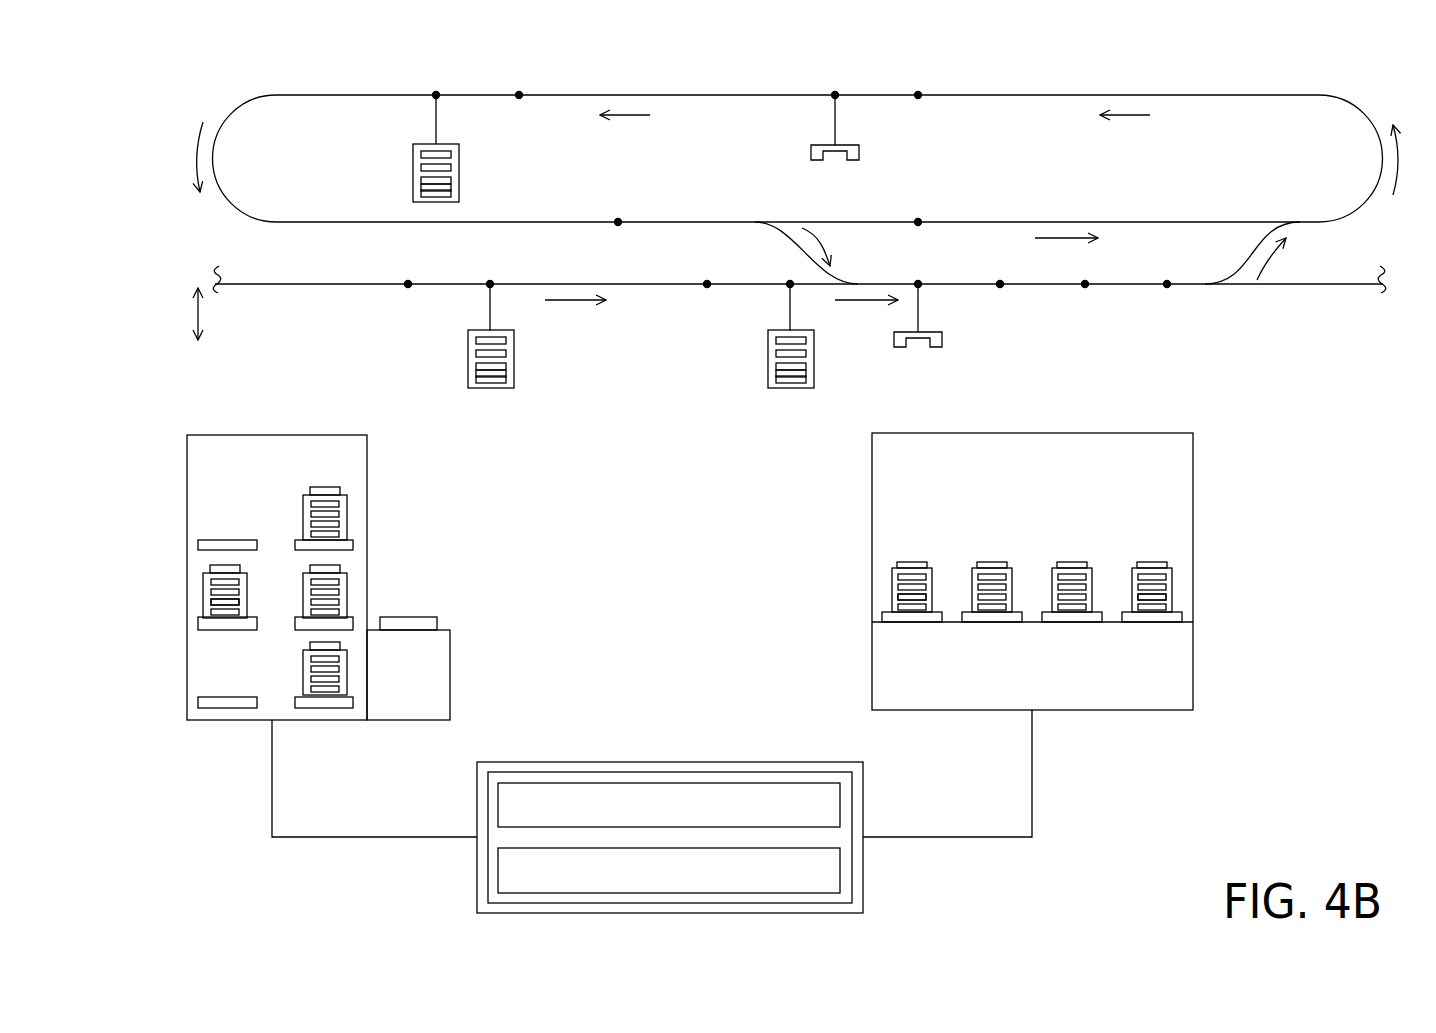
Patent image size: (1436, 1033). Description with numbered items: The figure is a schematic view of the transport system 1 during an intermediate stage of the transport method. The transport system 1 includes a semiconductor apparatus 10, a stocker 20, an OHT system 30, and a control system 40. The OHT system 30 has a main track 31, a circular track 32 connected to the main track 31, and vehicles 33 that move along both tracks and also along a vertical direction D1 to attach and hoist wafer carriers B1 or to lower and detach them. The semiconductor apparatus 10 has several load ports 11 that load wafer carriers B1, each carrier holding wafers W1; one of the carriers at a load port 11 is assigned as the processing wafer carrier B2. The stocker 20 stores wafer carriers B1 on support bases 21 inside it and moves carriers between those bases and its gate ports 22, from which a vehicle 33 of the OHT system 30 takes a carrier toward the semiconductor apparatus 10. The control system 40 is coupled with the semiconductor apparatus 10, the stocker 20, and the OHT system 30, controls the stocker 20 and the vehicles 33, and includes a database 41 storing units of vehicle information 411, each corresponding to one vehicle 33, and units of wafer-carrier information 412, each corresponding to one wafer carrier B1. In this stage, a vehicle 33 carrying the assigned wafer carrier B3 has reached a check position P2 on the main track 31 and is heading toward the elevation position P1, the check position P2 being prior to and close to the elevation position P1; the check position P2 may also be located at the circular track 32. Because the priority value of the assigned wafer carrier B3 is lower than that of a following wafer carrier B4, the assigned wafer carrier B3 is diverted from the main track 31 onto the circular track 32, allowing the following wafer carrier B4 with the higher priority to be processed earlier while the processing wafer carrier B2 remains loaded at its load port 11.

The transport system 1 is at (1380, 104).
The OHT (Over Hoist Transport) system 30 is at (228, 110).
The circular track 32 is at (236, 214).
The main track 31 is at (247, 283).
The vehicle 33 is at (463, 145).
The vertical direction D1 is at (196, 316).
The elevation position P1 is at (921, 276).
The check position P2 is at (622, 214).
The wafer carrier B1 is at (410, 160).
The processing wafer carrier B2 is at (890, 575).
The assigned wafer carrier B3 is at (766, 346).
The following wafer carrier B4 is at (466, 346).
The wafer W1 is at (421, 185).
The stocker 20 is at (180, 420).
The support base 21 is at (200, 545).
The gate port 22 is at (420, 617).
The semiconductor apparatus 10 is at (1213, 420).
The load port 11 is at (885, 621).
The control system 40 is at (465, 774).
The database 41 is at (488, 858).
The vehicle information 411 is at (842, 797).
The wafer-carrier information 412 is at (842, 860).